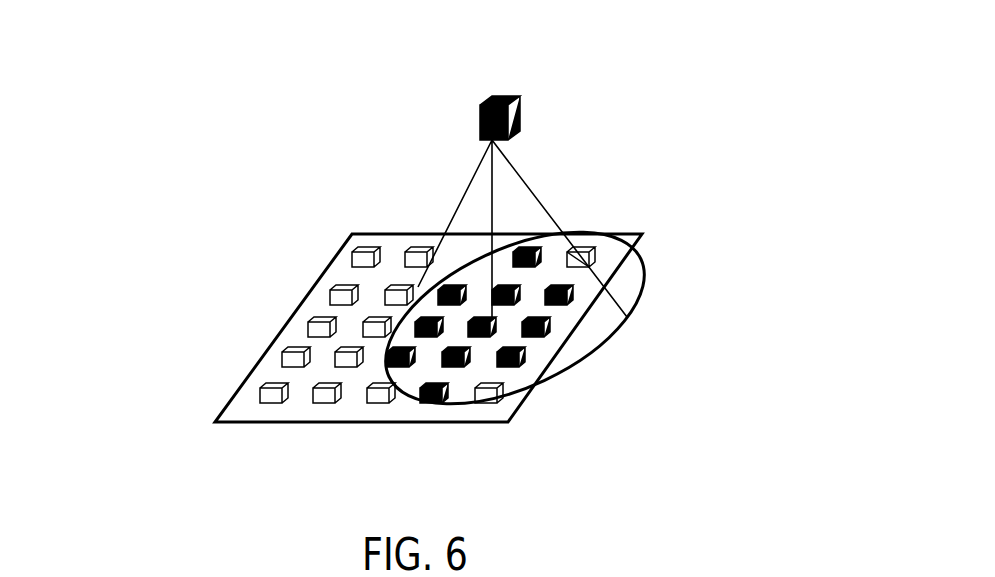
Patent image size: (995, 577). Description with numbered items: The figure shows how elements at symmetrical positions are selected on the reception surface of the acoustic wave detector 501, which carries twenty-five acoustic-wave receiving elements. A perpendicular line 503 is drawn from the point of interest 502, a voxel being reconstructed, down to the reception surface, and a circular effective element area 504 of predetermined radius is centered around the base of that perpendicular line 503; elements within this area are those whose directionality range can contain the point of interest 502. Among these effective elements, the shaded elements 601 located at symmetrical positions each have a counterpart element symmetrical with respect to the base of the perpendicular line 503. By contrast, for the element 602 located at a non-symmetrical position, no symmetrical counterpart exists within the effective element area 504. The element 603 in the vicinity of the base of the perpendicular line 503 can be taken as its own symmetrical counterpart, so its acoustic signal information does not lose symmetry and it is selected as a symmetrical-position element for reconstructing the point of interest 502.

The acoustic wave detector 501 is at (280, 327).
The point of interest 502 is at (475, 110).
The perpendicular line 503 is at (493, 212).
The effective element area 504 is at (649, 268).
The elements located at symmetrical positions 601 is at (527, 355).
The element located at a non-symmetrical position 602 is at (597, 252).
The element in the vicinity of the base of the perpendicular line 603 is at (480, 312).